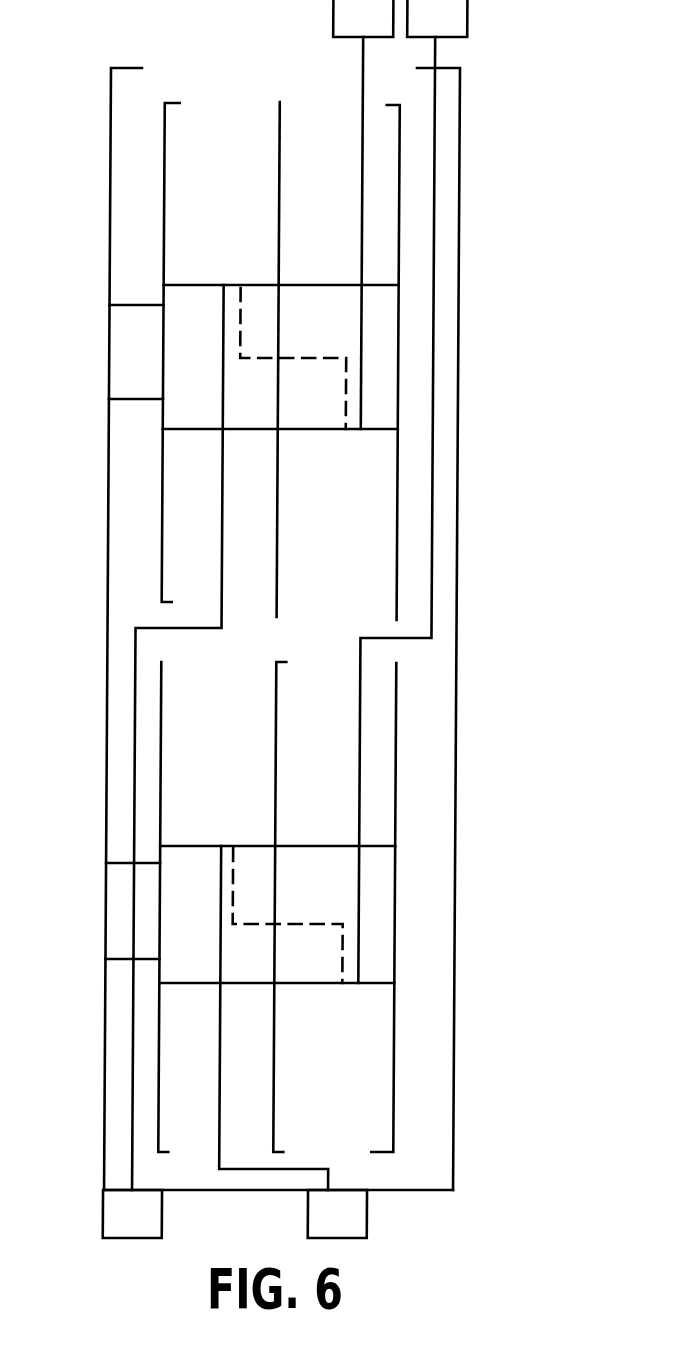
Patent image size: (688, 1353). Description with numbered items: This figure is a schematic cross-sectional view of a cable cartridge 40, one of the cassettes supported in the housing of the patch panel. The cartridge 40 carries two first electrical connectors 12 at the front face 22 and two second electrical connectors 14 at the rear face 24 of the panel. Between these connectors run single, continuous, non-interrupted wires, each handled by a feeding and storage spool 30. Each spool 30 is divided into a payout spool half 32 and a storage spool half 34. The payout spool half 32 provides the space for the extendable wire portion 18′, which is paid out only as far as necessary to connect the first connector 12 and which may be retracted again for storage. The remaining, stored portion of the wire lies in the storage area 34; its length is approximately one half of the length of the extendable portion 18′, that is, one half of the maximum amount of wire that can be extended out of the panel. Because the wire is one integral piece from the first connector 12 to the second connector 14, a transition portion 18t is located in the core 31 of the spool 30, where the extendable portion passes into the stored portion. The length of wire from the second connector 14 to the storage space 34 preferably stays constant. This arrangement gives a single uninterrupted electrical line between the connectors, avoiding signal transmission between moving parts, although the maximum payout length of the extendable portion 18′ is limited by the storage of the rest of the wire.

The first electrical connector 12 is at (373, 31).
The second electrical connector 14 is at (141, 1227).
The extendable connection wire portion 18′ is at (363, 192).
The transition portion 18t is at (312, 358).
The front face 22 is at (227, 72).
The rear face 24 is at (410, 1191).
The spool 30 is at (398, 553).
The core 31 is at (197, 430).
The payout spool half 32 is at (377, 470).
The storage spool half 34 is at (190, 223).
The cable cartridge 40 is at (456, 771).